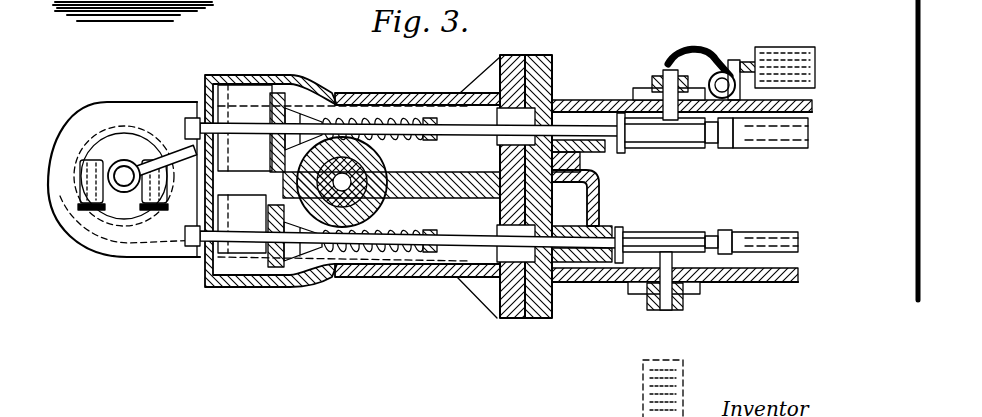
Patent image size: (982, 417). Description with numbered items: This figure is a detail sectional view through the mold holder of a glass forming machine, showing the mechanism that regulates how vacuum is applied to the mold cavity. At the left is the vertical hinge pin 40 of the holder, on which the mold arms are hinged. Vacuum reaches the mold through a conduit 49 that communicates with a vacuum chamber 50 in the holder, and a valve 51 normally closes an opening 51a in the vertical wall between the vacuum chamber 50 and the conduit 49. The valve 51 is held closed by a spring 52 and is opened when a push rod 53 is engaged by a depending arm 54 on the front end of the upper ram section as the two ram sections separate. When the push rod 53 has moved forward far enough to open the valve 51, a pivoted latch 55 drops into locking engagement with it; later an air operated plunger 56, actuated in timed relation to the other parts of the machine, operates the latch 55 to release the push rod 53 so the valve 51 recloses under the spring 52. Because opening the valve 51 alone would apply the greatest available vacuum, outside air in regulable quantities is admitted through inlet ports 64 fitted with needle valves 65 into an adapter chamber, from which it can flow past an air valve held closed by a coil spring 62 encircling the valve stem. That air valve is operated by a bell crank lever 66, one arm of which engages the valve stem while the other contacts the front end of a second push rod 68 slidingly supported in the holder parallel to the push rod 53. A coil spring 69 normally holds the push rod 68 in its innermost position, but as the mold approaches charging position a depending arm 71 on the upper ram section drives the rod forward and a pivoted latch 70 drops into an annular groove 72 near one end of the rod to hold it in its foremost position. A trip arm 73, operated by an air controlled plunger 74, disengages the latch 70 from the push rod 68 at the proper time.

The vertical hinge pin 40 is at (352, 170).
The conduit 49 is at (344, 228).
The vacuum chamber 50 is at (525, 201).
The valve 51 is at (262, 245).
The opening 51a is at (300, 255).
The spring 52 is at (365, 276).
The push rod 53 is at (585, 270).
The depending arm 54 is at (750, 240).
The pivoted latch 55 is at (668, 243).
The air operated plunger 56 is at (668, 357).
The coil spring 62 is at (125, 168).
The inlet ports 64 is at (93, 160).
The needle valves 65 is at (85, 207).
The bell crank lever 66 is at (190, 150).
The push rod 68 is at (237, 120).
The coil spring 69 is at (407, 96).
The pivoted latch 70 is at (672, 136).
The depending arm 71 is at (748, 136).
The annular groove 72 is at (650, 152).
The trip arm 73 is at (692, 58).
The air controlled plunger 74 is at (750, 62).